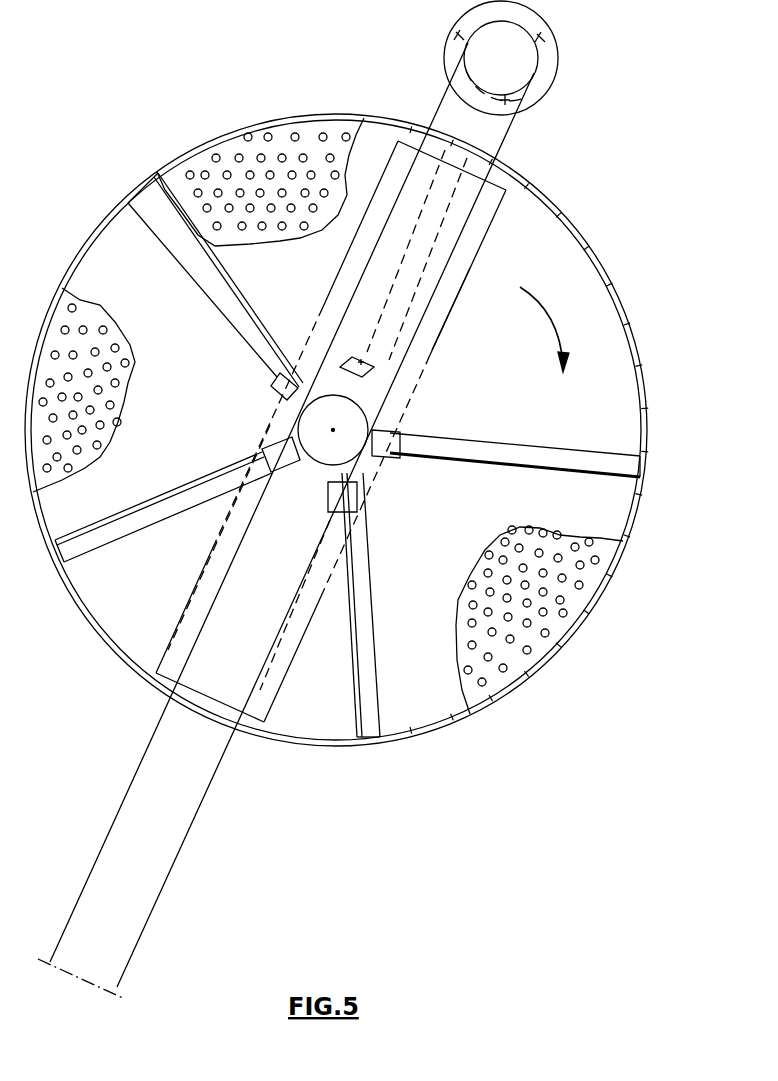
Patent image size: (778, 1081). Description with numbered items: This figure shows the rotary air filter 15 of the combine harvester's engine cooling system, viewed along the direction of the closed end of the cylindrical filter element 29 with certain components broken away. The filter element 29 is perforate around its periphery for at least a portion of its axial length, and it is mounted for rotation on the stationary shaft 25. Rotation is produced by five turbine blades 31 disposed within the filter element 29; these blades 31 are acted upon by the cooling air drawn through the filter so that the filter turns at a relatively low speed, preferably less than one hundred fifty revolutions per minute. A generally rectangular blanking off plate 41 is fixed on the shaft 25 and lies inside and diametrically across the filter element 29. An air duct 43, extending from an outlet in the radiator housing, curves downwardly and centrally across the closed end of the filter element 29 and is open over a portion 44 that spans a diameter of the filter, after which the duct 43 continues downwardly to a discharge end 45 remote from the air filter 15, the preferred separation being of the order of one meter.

The rotary air filter 15 is at (586, 236).
The stationary shaft 25 is at (363, 462).
The filter element 29 is at (230, 147).
The turbine blades 31 is at (472, 220).
The blanking off plate 41 is at (462, 258).
The air duct 43 is at (546, 117).
The open portion 44 is at (440, 300).
The discharge end 45 is at (100, 992).